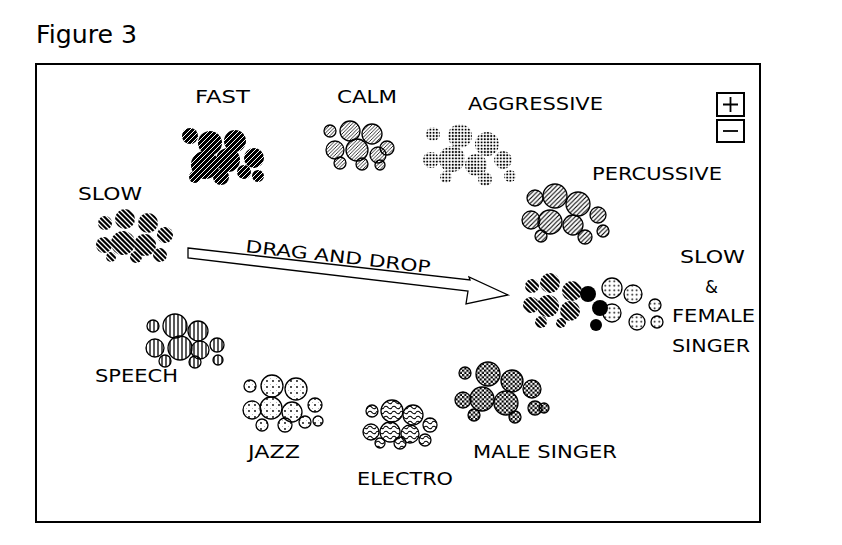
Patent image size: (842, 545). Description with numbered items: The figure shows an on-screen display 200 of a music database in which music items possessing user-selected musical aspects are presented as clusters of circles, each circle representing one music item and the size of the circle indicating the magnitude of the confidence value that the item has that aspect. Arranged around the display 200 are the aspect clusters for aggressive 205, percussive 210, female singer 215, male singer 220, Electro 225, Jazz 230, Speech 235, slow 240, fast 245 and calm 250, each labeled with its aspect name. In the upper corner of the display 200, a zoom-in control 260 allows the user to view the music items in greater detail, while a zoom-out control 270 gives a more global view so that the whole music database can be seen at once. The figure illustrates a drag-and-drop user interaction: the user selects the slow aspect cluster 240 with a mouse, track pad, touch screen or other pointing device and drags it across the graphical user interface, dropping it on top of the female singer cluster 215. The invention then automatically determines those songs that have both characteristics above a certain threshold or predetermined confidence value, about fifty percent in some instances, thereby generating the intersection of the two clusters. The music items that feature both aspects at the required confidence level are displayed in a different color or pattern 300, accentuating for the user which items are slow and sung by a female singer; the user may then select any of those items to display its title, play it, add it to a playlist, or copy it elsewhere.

The on-screen display 200 is at (443, 63).
The aggressive aspect cluster 205 is at (443, 181).
The percussive aspect cluster 210 is at (530, 226).
The female singer aspect cluster 215 is at (605, 278).
The male singer aspect cluster 220 is at (490, 363).
The Electro aspect cluster 225 is at (392, 401).
The Jazz aspect cluster 230 is at (280, 376).
The Speech aspect cluster 235 is at (203, 315).
The slow aspect cluster 240 is at (112, 262).
The fast aspect cluster 245 is at (240, 138).
The calm aspect cluster 250 is at (345, 168).
The zoom-in function 260 is at (745, 95).
The zoom-out function 270 is at (745, 122).
The intersection pattern 300 is at (582, 327).